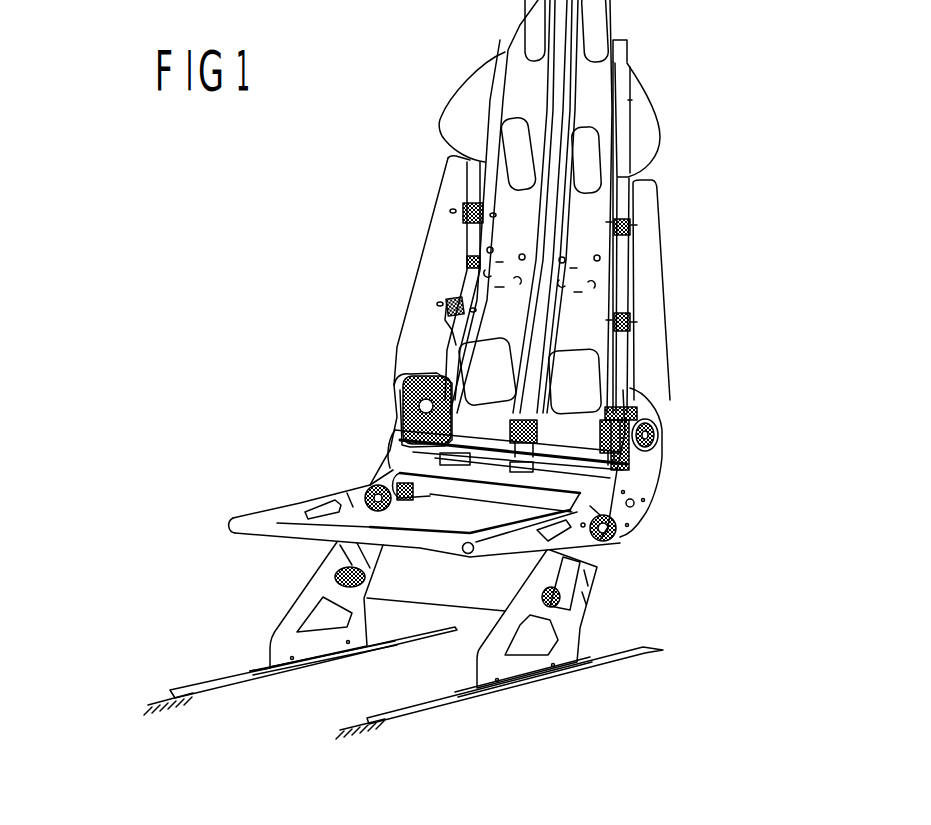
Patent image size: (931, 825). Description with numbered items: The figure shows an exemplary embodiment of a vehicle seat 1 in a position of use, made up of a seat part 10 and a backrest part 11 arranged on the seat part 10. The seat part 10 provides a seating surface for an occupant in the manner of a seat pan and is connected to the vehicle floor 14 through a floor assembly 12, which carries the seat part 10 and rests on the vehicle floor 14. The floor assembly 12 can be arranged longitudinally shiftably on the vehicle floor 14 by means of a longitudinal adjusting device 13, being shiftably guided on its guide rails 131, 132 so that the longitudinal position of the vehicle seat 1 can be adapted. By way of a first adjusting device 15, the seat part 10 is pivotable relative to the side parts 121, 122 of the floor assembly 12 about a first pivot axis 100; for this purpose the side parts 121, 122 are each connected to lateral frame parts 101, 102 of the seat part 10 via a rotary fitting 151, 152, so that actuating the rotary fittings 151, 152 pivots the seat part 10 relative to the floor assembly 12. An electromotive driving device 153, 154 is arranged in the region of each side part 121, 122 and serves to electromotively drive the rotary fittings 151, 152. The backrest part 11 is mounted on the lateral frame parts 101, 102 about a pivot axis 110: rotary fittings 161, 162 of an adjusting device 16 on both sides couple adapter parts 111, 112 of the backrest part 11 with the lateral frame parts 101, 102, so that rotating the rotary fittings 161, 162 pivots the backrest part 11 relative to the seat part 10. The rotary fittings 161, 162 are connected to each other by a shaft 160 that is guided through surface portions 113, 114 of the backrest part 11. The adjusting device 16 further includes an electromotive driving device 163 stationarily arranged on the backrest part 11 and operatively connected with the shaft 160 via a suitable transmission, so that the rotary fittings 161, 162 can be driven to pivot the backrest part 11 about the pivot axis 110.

The vehicle seat 1 is at (700, 166).
The seat part 10 is at (355, 502).
The backrest part 11 is at (500, 233).
The floor assembly 12 is at (278, 605).
The longitudinal adjusting device 13 is at (198, 678).
The vehicle floor 14 is at (160, 705).
The first adjusting device 15 is at (320, 548).
The adjusting device 16 is at (388, 387).
The first pivot axis 100 is at (610, 537).
The lateral frame part 101 is at (280, 507).
The lateral frame part 102 is at (607, 557).
The pivot axis 110 is at (662, 442).
The adapter part 111 is at (423, 467).
The adapter part 112 is at (658, 413).
The surface portion 113 is at (500, 197).
The surface portion 114 is at (600, 213).
The side part 121 is at (270, 645).
The side part 122 is at (530, 667).
The guide rail 131 is at (232, 687).
The guide rail 132 is at (427, 707).
The rotary fitting 151 is at (390, 465).
The rotary fitting 152 is at (623, 533).
The electromotive driving device 153 is at (347, 567).
The electromotive driving device 154 is at (557, 578).
The shaft 160 is at (605, 430).
The rotary fitting 161 is at (402, 387).
The rotary fitting 162 is at (660, 423).
The electromotive driving device 163 is at (457, 347).